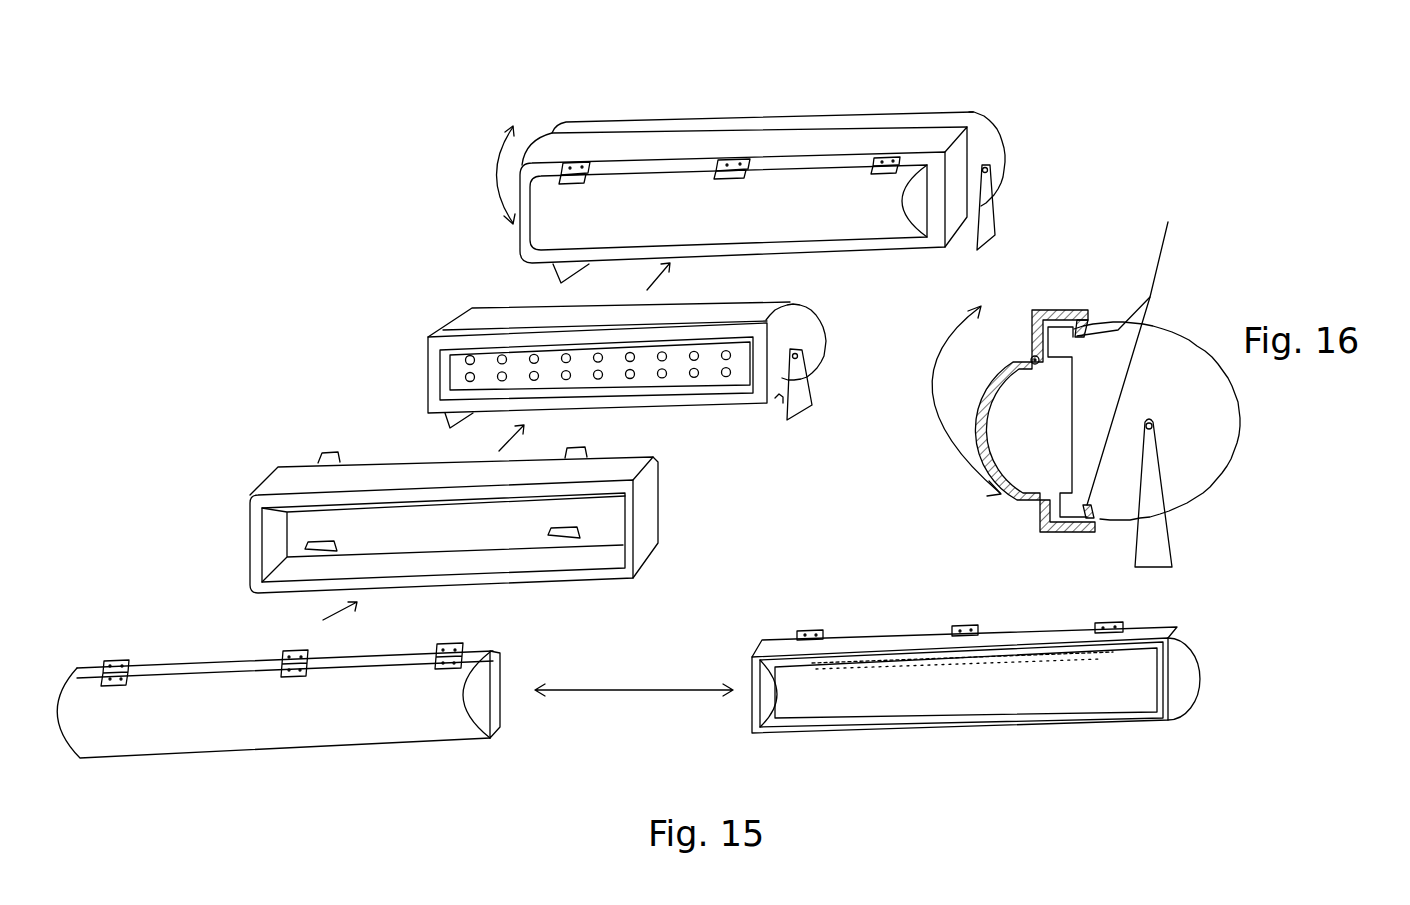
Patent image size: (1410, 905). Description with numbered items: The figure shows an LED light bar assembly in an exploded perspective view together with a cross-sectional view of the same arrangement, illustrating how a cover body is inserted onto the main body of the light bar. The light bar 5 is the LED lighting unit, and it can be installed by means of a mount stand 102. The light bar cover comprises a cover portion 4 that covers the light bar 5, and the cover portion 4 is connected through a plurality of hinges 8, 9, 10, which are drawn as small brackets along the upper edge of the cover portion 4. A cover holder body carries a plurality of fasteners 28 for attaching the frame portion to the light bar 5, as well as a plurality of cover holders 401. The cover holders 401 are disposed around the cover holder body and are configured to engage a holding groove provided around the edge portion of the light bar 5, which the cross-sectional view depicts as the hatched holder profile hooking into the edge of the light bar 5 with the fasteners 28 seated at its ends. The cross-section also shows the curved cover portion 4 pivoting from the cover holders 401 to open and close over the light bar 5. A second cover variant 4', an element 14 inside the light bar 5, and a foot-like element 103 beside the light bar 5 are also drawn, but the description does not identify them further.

In FIG. 15, the cover portion 4 is at (681, 201).
In FIG. 16, the cover portion 4 is at (986, 403).
In FIG. 15, the cover (alternative) 4' is at (1007, 680).
In FIG. 15, the light bar 5 is at (995, 133).
In FIG. 16, the light bar 5 is at (1177, 340).
In FIG. 15, the hinge 8 is at (107, 665).
In FIG. 15, the hinge 9 is at (452, 650).
In FIG. 15, the hinge 10 is at (283, 657).
In FIG. 15, the light source board 14 is at (708, 370).
In FIG. 16, the light source board 14 is at (1072, 415).
In FIG. 15, the fastener 28 is at (336, 460).
In FIG. 16, the fastener 28 is at (1080, 321).
In FIG. 15, the mount stand 102 is at (443, 331).
In FIG. 16, the mount stand 102 is at (1137, 348).
In FIG. 15, the mounting foot 103 is at (985, 212).
In FIG. 16, the mounting foot 103 is at (1155, 540).
In FIG. 15, the cover holder 401 is at (270, 488).
In FIG. 16, the cover holder 401 is at (1035, 310).